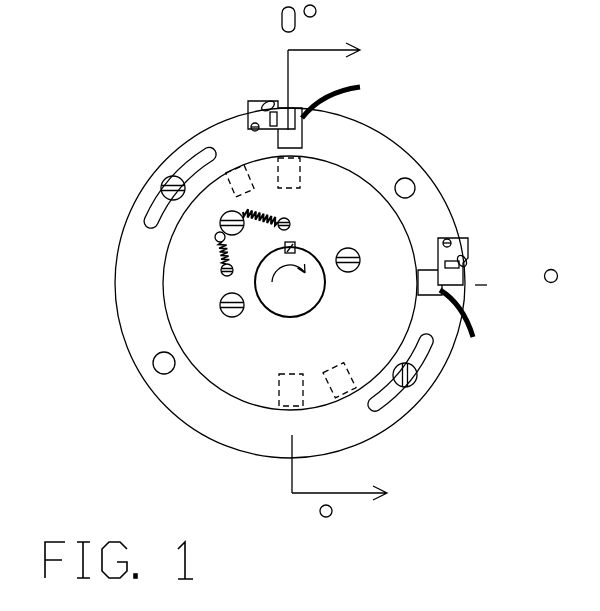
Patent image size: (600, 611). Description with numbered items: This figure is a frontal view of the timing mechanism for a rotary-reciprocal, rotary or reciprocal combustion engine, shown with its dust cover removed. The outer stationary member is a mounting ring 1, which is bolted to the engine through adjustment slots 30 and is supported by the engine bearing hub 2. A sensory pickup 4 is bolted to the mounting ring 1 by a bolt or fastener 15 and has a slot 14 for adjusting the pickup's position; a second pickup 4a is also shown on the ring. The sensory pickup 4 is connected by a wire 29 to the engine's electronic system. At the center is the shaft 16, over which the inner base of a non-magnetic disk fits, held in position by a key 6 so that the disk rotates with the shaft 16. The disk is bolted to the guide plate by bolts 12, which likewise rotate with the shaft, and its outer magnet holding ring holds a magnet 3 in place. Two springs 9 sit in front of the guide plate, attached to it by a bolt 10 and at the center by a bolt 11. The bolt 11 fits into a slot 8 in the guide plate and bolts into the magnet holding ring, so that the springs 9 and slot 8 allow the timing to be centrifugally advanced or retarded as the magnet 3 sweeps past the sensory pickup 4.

The mounting ring 1 is at (398, 410).
The engine bearing hub 2 is at (409, 271).
The magnet 3 is at (341, 385).
The sensory pickup 4 is at (296, 145).
The bracket 4a is at (430, 287).
The key 6 is at (293, 247).
The slot 8 is at (216, 238).
The springs 9 is at (222, 247).
The bolt 10 is at (227, 271).
The bolt 11 is at (221, 222).
The bolts 12 is at (223, 308).
The slot 14 is at (460, 256).
The bolt or fastener 15 is at (447, 239).
The shaft 16 is at (273, 288).
The wire 29 is at (495, 335).
The adjustment slots 30 is at (412, 385).